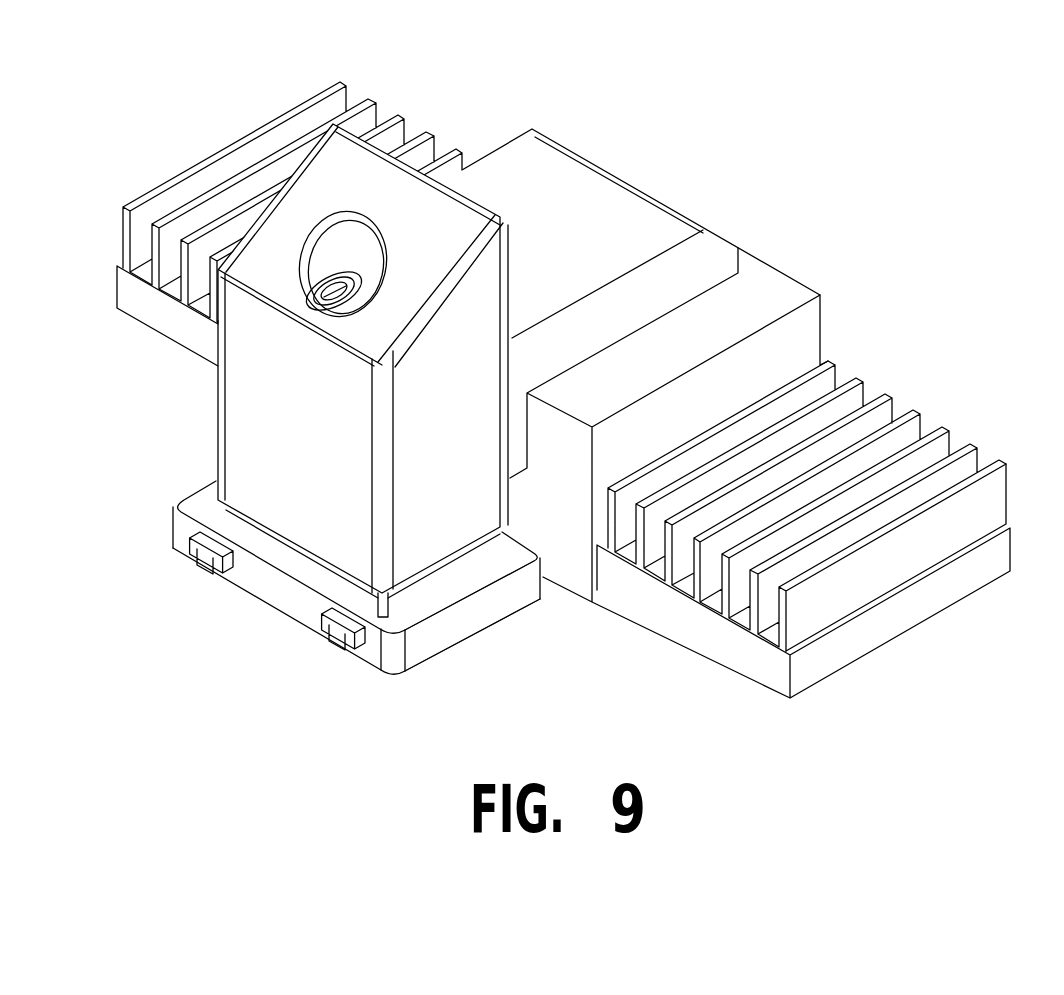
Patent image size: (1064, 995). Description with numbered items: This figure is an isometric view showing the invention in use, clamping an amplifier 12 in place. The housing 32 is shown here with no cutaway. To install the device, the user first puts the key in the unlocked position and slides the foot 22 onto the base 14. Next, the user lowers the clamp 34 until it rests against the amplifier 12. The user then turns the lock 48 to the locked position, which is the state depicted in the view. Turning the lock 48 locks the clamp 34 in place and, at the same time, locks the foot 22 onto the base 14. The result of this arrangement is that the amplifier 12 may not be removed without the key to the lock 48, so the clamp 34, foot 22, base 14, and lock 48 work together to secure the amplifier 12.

The amplifier 12 is at (676, 381).
The base 14 is at (366, 593).
The foot 22 is at (450, 580).
The housing 32 is at (268, 328).
The clamp 34 is at (590, 198).
The lock 48 is at (327, 277).